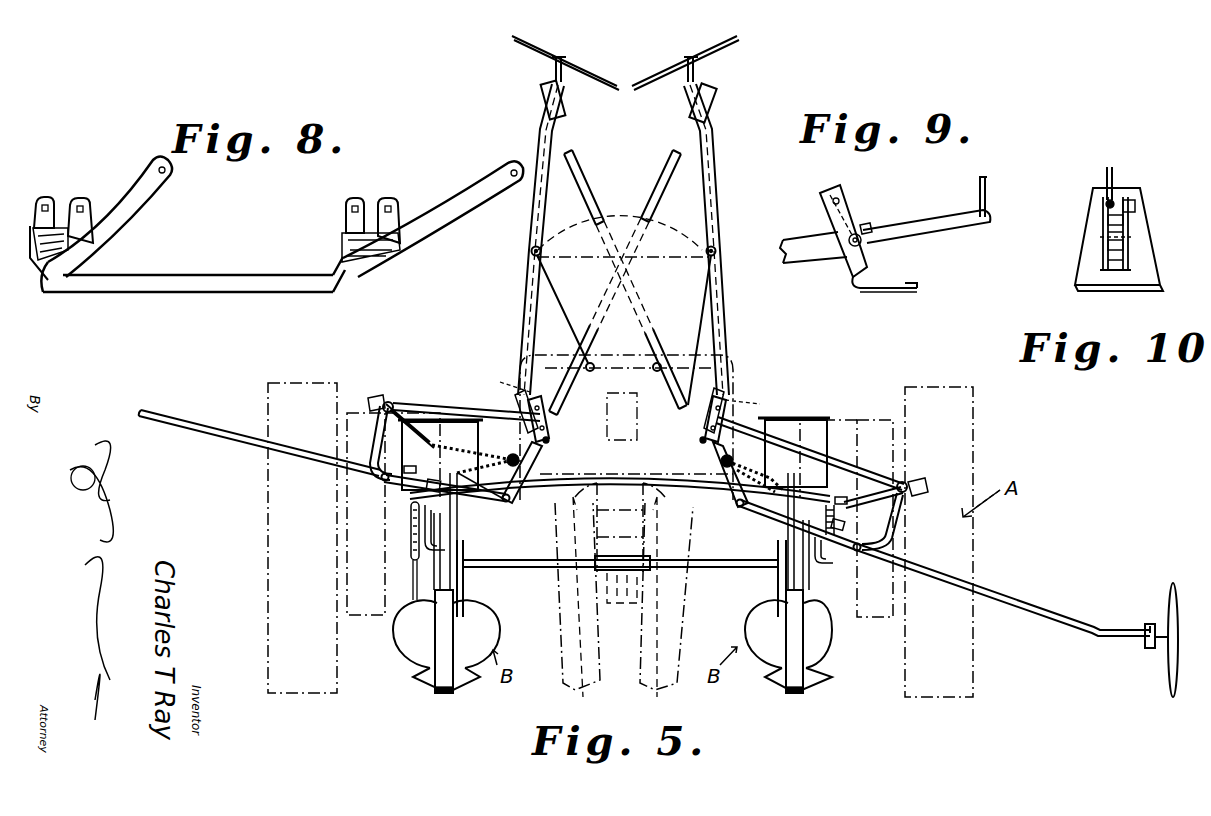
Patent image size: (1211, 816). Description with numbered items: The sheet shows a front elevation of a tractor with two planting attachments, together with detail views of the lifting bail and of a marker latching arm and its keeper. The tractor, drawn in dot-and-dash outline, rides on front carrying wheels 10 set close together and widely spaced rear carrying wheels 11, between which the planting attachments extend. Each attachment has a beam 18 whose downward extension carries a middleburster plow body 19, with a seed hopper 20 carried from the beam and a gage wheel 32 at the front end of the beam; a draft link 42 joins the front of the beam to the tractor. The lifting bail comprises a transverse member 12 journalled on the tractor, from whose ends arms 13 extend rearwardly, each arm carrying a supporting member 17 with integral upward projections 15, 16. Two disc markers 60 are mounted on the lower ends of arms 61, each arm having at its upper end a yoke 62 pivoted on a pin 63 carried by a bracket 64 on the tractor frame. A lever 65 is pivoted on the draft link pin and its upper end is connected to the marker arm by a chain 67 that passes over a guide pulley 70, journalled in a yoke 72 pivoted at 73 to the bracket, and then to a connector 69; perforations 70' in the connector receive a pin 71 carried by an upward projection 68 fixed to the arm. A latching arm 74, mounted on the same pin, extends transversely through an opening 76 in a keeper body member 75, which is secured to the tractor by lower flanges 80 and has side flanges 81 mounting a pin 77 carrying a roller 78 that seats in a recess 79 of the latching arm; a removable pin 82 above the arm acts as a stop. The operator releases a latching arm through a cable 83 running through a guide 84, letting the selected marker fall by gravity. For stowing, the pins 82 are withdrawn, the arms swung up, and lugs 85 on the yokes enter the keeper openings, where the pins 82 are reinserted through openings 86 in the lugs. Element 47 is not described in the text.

In FIG. 5, the front carrying wheels 10 is at (588, 652).
In FIG. 5, the rear carrying wheels 11 is at (285, 395).
In FIG. 8, the bail member 12 is at (232, 281).
In FIG. 8, the bail arms 13 is at (140, 222).
In FIG. 8, the projection 15 is at (45, 200).
In FIG. 8, the projection 16 is at (88, 210).
In FIG. 8, the supporting member 17 is at (88, 245).
In FIG. 5, the beam 18 is at (420, 545).
In FIG. 5, the middleburster plow body 19 is at (480, 615).
In FIG. 5, the seed hopper 20 is at (614, 454).
In FIG. 5, the gage wheel 32 is at (437, 625).
In FIG. 5, the draft link 42 is at (468, 568).
In FIG. 5, the spring 47 is at (410, 530).
In FIG. 5, the rotatable markers 60 is at (655, 70).
In FIG. 5, the marker arms 61 is at (548, 150).
In FIG. 5, the yoke 62 is at (472, 503).
In FIG. 5, the pin 63 is at (507, 505).
In FIG. 5, the bracket 64 is at (512, 501).
In FIG. 5, the lever 65 is at (458, 515).
In FIG. 5, the chain 67 is at (452, 455).
In FIG. 5, the upward projection 68 is at (545, 362).
In FIG. 5, the connector 69 is at (594, 370).
In FIG. 5, the guide pulley 70 is at (635, 452).
In FIG. 5, the perforations 70' is at (648, 428).
In FIG. 5, the pin 71 is at (368, 403).
In FIG. 5, the yoke 72 is at (533, 432).
In FIG. 5, the pivot 73 is at (535, 462).
In FIG. 9, the latching arm 74 is at (945, 228).
In FIG. 10, the latching arm 74 is at (1122, 215).
In FIG. 5, the latching arm 74 is at (655, 196).
In FIG. 9, the keeper body member 75 is at (885, 290).
In FIG. 10, the keeper body member 75 is at (1145, 258).
In FIG. 5, the keeper body member 75 is at (560, 400).
In FIG. 10, the opening 76 is at (1128, 200).
In FIG. 9, the pin 77 is at (862, 247).
In FIG. 10, the pin 77 is at (1100, 237).
In FIG. 9, the roller 78 is at (872, 225).
In FIG. 10, the roller 78 is at (1125, 232).
In FIG. 9, the recess 79 is at (840, 252).
In FIG. 9, the flanges 80 is at (917, 288).
In FIG. 10, the flanges 80 is at (1113, 290).
In FIG. 5, the flanges 80 is at (552, 440).
In FIG. 9, the flanges 81 is at (845, 197).
In FIG. 10, the flanges 81 is at (1102, 222).
In FIG. 9, the pin 82 is at (830, 195).
In FIG. 10, the pin 82 is at (1106, 200).
In FIG. 9, the cable 83 is at (988, 188).
In FIG. 10, the cable 83 is at (1110, 167).
In FIG. 5, the cable 83 is at (560, 310).
In FIG. 5, the guide 84 is at (531, 250).
In FIG. 5, the lugs 85 is at (857, 543).
In FIG. 5, the openings 86 is at (418, 468).